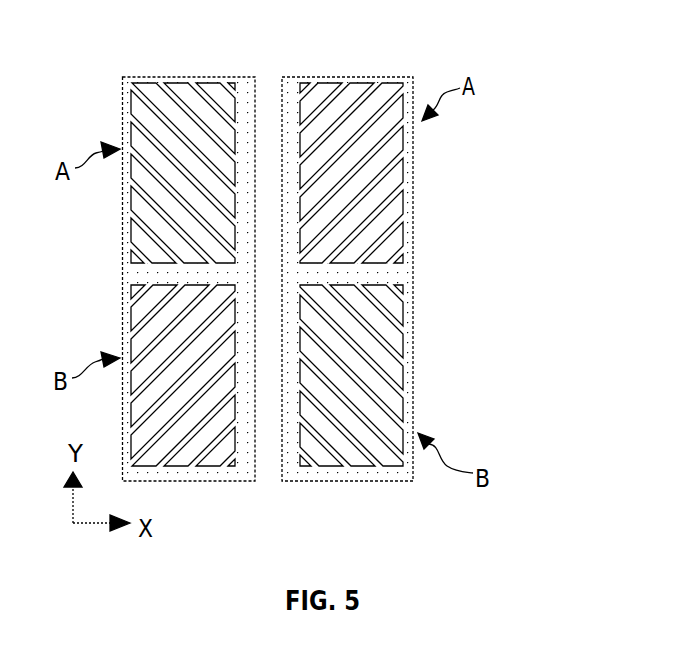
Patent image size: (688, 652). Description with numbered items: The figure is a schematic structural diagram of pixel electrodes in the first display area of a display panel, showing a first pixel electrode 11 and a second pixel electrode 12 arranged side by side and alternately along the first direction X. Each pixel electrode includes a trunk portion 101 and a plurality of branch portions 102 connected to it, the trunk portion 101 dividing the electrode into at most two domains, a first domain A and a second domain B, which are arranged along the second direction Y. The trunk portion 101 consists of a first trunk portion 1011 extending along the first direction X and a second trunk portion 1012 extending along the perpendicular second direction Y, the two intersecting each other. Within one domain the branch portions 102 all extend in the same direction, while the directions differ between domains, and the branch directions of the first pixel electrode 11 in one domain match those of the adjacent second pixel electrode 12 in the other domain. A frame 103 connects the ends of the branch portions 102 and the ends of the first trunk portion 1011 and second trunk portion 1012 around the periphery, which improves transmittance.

The second pixel electrode 12 is at (207, 77).
The first pixel electrode 11 is at (332, 77).
The trunk portion 101 is at (512, 253).
The first trunk portion 1011 is at (393, 270).
The second trunk portion 1012 is at (288, 363).
The branch portion 102 is at (380, 177).
The frame 103 is at (412, 217).